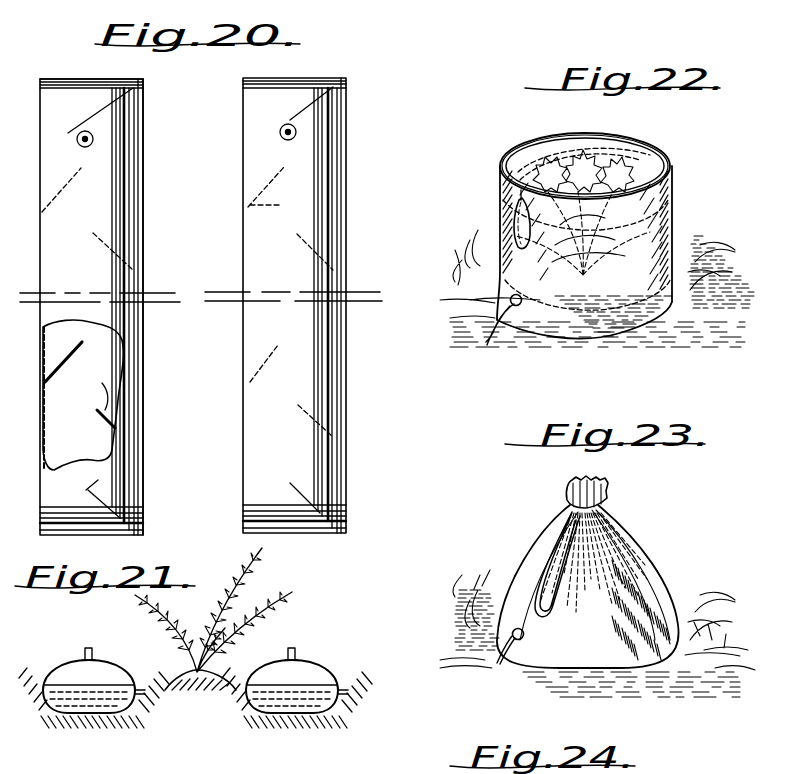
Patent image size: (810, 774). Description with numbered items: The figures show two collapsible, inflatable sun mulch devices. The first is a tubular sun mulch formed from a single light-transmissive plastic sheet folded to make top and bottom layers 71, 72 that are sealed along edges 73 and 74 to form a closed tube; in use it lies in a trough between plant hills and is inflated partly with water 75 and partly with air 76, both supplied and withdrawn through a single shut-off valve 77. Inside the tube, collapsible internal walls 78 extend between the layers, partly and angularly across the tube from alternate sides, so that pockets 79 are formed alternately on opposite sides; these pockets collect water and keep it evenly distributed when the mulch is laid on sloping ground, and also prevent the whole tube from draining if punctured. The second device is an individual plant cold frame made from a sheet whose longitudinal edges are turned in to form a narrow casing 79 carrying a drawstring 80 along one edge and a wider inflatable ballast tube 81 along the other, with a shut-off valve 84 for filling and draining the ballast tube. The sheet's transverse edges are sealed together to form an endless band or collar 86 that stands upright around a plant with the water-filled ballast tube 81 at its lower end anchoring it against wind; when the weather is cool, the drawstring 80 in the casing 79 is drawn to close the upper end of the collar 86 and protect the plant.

In FIG. 20, the top layer 71 is at (48, 247).
In FIG. 21, the top layer 71 is at (70, 672).
In FIG. 21, the bottom layer 72 is at (66, 712).
In FIG. 20, the sealed edge 73 is at (101, 84).
In FIG. 20, the sealed edge 74 is at (141, 478).
In FIG. 21, the sealed edge 74 is at (146, 688).
In FIG. 21, the water 75 is at (118, 690).
In FIG. 20, the air 76 is at (300, 228).
In FIG. 21, the air 76 is at (100, 677).
In FIG. 20, the shut-off valve 77 is at (86, 147).
In FIG. 21, the shut-off valve 77 is at (92, 648).
In FIG. 20, the internal wall 78 is at (58, 376).
In FIG. 20, the pocket / casing 79 is at (46, 351).
In FIG. 22, the pocket / casing 79 is at (501, 180).
In FIG. 23, the pocket / casing 79 is at (602, 506).
In FIG. 22, the drawstring 80 is at (519, 234).
In FIG. 23, the drawstring 80 is at (553, 606).
In FIG. 22, the inflatable ballast tube 81 is at (509, 301).
In FIG. 22, the shut-off valve 84 is at (486, 332).
In FIG. 23, the shut-off valve 84 is at (500, 664).
In FIG. 22, the endless band or collar 86 is at (687, 219).